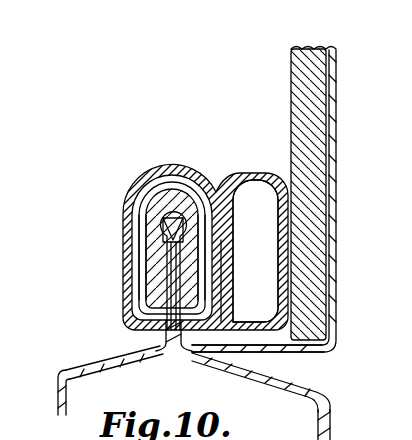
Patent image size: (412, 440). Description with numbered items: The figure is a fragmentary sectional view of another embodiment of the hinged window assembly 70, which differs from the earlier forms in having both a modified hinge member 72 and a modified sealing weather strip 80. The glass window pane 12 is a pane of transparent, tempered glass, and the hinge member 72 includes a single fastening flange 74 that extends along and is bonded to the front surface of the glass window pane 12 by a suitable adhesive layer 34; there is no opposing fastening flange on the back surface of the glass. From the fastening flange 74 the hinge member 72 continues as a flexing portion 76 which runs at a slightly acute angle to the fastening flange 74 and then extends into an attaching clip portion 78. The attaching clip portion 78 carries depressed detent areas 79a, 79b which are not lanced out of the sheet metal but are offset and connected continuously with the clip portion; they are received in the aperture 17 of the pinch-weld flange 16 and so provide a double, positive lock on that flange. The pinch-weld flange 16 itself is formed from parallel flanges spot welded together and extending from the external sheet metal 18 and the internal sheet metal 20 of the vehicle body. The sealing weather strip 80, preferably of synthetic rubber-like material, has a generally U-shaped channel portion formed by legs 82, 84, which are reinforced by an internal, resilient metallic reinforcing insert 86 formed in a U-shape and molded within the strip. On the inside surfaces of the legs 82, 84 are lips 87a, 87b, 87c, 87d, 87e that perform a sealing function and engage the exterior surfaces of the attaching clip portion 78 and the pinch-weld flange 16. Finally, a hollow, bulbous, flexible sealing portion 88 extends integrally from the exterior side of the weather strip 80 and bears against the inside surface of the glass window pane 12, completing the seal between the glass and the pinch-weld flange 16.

The glass window pane 12 is at (296, 70).
The pinch-weld flange 16 is at (160, 222).
The aperture 17 is at (165, 268).
The external sheet metal 18 is at (332, 413).
The internal sheet metal 20 is at (58, 378).
The adhesive layer 34 is at (334, 52).
The hinged window assembly 70 is at (158, 152).
The hinge member 72 is at (334, 352).
The fastening flange 74 is at (334, 120).
The flexing portion 76 is at (280, 366).
The attaching clip portion 78 is at (133, 198).
The depressed detent area 79a is at (145, 282).
The depressed detent area 79b is at (222, 262).
The sealing weather strip 80 is at (178, 168).
The leg 82 is at (126, 330).
The leg 84 is at (223, 305).
The reinforcing insert 86 is at (193, 190).
The lip 87a is at (172, 352).
The lip 87b is at (223, 275).
The lip 87c is at (222, 230).
The lip 87d is at (133, 284).
The lip 87e is at (133, 244).
The bulbous sealing portion 88 is at (258, 170).